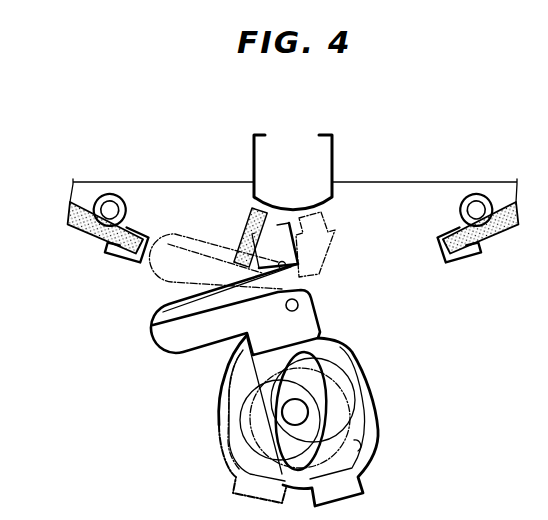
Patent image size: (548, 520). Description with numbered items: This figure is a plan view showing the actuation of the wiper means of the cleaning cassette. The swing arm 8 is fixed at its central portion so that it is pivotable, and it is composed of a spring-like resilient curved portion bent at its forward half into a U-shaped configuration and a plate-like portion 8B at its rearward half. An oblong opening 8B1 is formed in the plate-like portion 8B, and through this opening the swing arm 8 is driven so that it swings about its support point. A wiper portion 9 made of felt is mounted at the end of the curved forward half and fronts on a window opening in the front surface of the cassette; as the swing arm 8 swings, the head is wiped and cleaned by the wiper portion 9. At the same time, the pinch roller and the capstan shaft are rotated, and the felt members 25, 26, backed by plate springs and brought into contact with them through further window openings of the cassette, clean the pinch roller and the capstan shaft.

The felt member 25 is at (82, 208).
The felt member 26 is at (505, 200).
The wiper portion 9 is at (252, 208).
The swing arm 8 is at (150, 337).
The plate-like portion 8B is at (357, 401).
The oblong opening 8B1 is at (356, 446).